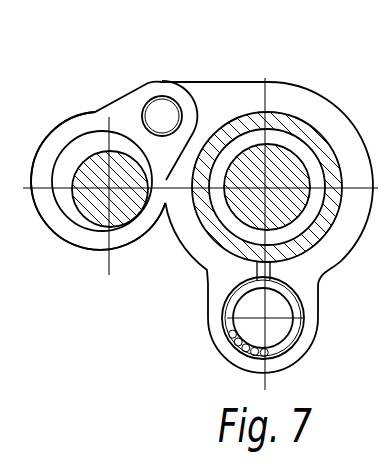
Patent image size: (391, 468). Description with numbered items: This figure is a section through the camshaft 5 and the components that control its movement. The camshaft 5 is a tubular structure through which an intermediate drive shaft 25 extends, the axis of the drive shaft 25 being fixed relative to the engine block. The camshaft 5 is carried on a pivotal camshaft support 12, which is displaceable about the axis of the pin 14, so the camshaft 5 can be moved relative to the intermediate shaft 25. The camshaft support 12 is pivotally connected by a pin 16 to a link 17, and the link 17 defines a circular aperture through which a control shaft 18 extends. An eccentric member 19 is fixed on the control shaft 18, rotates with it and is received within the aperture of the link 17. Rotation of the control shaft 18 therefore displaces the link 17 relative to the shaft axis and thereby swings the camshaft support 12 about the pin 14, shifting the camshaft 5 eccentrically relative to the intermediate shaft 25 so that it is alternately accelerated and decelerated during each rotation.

The camshaft support 12 is at (252, 93).
The link 17 is at (62, 118).
The pin 16 is at (157, 113).
The eccentric member 19 is at (63, 198).
The control shaft 18 is at (93, 212).
The camshaft 5 is at (308, 131).
The intermediate drive shaft 25 is at (252, 203).
The pin 14 is at (252, 325).